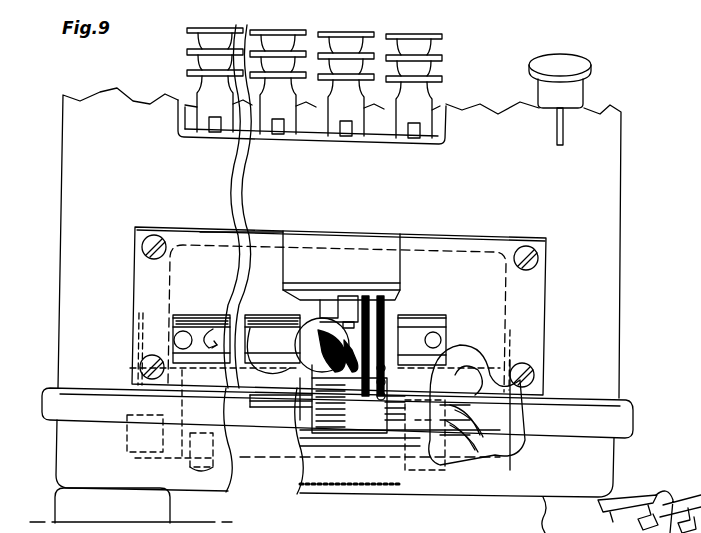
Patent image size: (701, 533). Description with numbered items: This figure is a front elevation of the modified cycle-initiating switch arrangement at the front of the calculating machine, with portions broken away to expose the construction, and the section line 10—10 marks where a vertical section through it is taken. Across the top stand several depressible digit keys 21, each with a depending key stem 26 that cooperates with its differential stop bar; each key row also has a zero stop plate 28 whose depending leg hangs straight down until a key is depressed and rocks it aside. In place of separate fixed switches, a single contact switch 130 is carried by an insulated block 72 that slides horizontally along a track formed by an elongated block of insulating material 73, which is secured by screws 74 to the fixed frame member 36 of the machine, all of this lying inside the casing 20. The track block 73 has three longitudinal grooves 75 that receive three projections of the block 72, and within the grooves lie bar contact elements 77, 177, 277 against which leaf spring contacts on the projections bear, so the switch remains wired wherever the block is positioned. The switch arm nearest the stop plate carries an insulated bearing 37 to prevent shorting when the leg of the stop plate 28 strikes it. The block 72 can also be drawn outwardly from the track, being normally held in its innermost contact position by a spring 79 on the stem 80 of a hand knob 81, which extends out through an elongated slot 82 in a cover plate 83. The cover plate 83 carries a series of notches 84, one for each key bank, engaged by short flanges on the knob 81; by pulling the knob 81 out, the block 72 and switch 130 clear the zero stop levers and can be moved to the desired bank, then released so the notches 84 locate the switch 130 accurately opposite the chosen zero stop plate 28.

The section line 10 is at (340, 267).
The housing 20 is at (603, 157).
The digit key 21 is at (448, 54).
The key stem 26 is at (408, 123).
The zero stop plate 28 is at (348, 300).
The fixed frame member 36 is at (393, 460).
The insulated bearing 37 is at (375, 296).
The insulated block 72 is at (372, 438).
The track block 73 is at (330, 456).
The screws 74 is at (205, 492).
The longitudinal grooves 75 is at (300, 412).
The bar contact element 77 is at (472, 470).
The spring 79 is at (338, 330).
The stem 80 is at (310, 348).
The hand knob 81 is at (333, 385).
The elongated slot 82 is at (212, 328).
The cover plate 83 is at (528, 285).
The notches 84 is at (272, 316).
The contact switch 130 is at (397, 300).
The bar contact element 177 is at (530, 418).
The bar contact element 277 is at (455, 375).